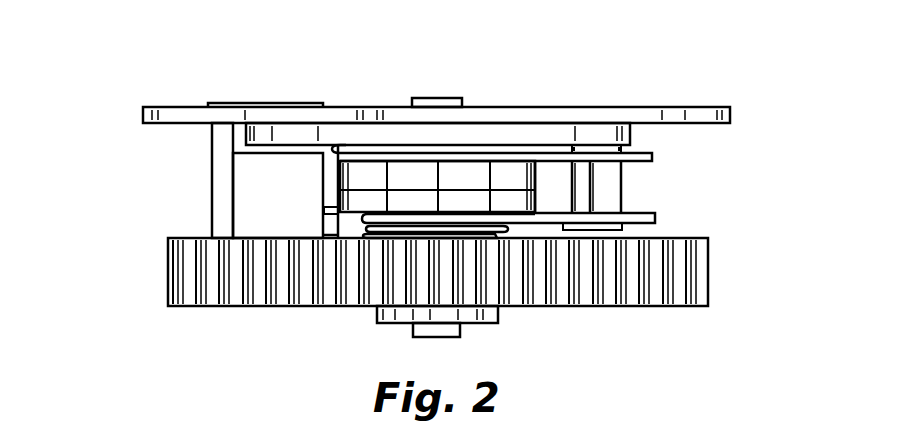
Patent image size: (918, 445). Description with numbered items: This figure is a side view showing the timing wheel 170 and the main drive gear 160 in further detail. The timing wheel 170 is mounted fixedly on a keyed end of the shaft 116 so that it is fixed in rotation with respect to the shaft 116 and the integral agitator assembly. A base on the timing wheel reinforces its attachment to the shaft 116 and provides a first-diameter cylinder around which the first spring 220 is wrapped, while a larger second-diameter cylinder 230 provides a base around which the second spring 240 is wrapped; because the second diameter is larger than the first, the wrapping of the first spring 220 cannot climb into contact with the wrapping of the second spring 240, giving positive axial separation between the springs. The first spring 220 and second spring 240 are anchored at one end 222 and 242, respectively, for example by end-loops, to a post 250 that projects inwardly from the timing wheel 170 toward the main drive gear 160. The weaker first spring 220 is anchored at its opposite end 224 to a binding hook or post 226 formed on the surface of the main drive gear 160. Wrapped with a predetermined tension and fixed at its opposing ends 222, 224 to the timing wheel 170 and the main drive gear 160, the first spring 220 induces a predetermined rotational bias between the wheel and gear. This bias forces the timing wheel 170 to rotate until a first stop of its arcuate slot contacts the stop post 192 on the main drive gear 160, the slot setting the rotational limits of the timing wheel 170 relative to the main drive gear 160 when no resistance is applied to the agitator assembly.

The shaft 116 is at (447, 100).
The main drive gear 160 is at (737, 295).
The timing wheel 170 is at (538, 72).
The stop post 192 is at (268, 182).
The first spring 220 is at (548, 217).
The end of first spring 222 is at (657, 220).
The opposite end of first spring 224 is at (337, 238).
The binding hook or post 226 is at (328, 218).
The second-diameter cylinder 230 is at (407, 173).
The second spring 240 is at (565, 152).
The end of second spring 242 is at (638, 147).
The post 250 is at (613, 188).